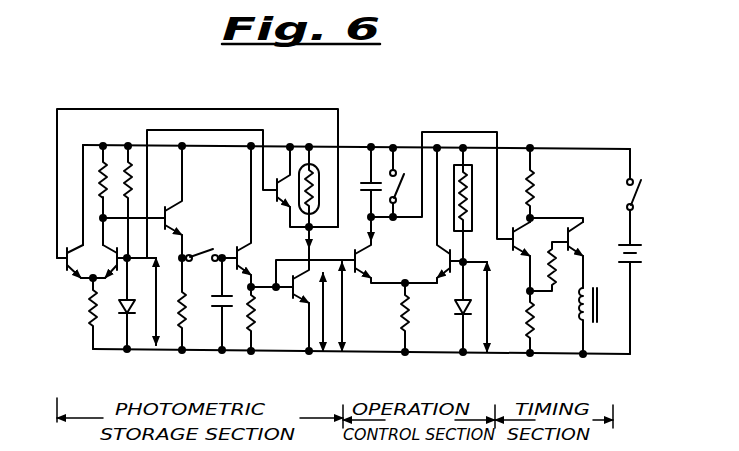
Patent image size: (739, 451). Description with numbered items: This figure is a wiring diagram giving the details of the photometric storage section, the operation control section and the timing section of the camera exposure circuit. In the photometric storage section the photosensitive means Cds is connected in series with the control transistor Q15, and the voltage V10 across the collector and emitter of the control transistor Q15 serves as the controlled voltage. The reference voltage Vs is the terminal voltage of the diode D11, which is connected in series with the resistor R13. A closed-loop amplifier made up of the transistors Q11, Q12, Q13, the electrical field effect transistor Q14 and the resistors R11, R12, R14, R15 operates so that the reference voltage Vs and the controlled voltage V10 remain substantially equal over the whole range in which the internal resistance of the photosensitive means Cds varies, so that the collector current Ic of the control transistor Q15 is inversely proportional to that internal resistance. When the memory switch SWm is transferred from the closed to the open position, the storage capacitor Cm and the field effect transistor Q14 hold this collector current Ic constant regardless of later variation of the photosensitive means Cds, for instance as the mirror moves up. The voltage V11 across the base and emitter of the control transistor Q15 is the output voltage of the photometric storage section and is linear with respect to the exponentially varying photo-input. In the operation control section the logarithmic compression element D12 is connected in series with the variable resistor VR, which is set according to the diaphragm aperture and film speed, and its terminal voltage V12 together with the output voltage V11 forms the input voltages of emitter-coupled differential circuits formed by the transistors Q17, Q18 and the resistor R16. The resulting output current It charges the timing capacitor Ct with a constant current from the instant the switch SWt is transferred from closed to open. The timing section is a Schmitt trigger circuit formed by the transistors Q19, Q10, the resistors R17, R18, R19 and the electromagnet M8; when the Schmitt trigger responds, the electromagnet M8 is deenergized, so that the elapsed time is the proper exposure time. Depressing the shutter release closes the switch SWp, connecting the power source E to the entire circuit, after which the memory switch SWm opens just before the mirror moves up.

The resistor R11 is at (100, 165).
The resistor R13 is at (128, 163).
The resistor R12 is at (90, 316).
The resistor R14 is at (180, 316).
The resistor R15 is at (254, 318).
The resistor R16 is at (403, 322).
The resistor R17 is at (548, 323).
The resistor R18 is at (534, 186).
The resistor R19 is at (555, 268).
The transistor Q11 is at (62, 260).
The transistor Q12 is at (120, 237).
The transistor Q13 is at (185, 212).
The electrical field effect transistor Q14 is at (238, 247).
The control transistor Q15 is at (273, 202).
The transistor Q17 is at (396, 261).
The transistor Q18 is at (433, 214).
The transistor Q19 is at (537, 256).
The transistor Q10 is at (583, 236).
The photosensitive means Cds is at (320, 182).
The timing capacitor Ct is at (360, 192).
The storage capacitor Cm is at (214, 306).
The memory switch SWm is at (209, 247).
The switch SWt is at (408, 182).
The switch SWp is at (627, 201).
The variable resistor VR is at (470, 196).
The diode D11 is at (124, 316).
The logarithmic compression element D12 is at (455, 308).
The terminal voltage Vs is at (155, 301).
The collector-emitter voltage V10 is at (324, 312).
The base-emitter voltage V11 is at (347, 306).
The terminal voltage V12 is at (483, 307).
The collector current Ic is at (319, 243).
The output current It is at (379, 233).
The electromagnet M8 is at (600, 306).
The battery E is at (640, 254).